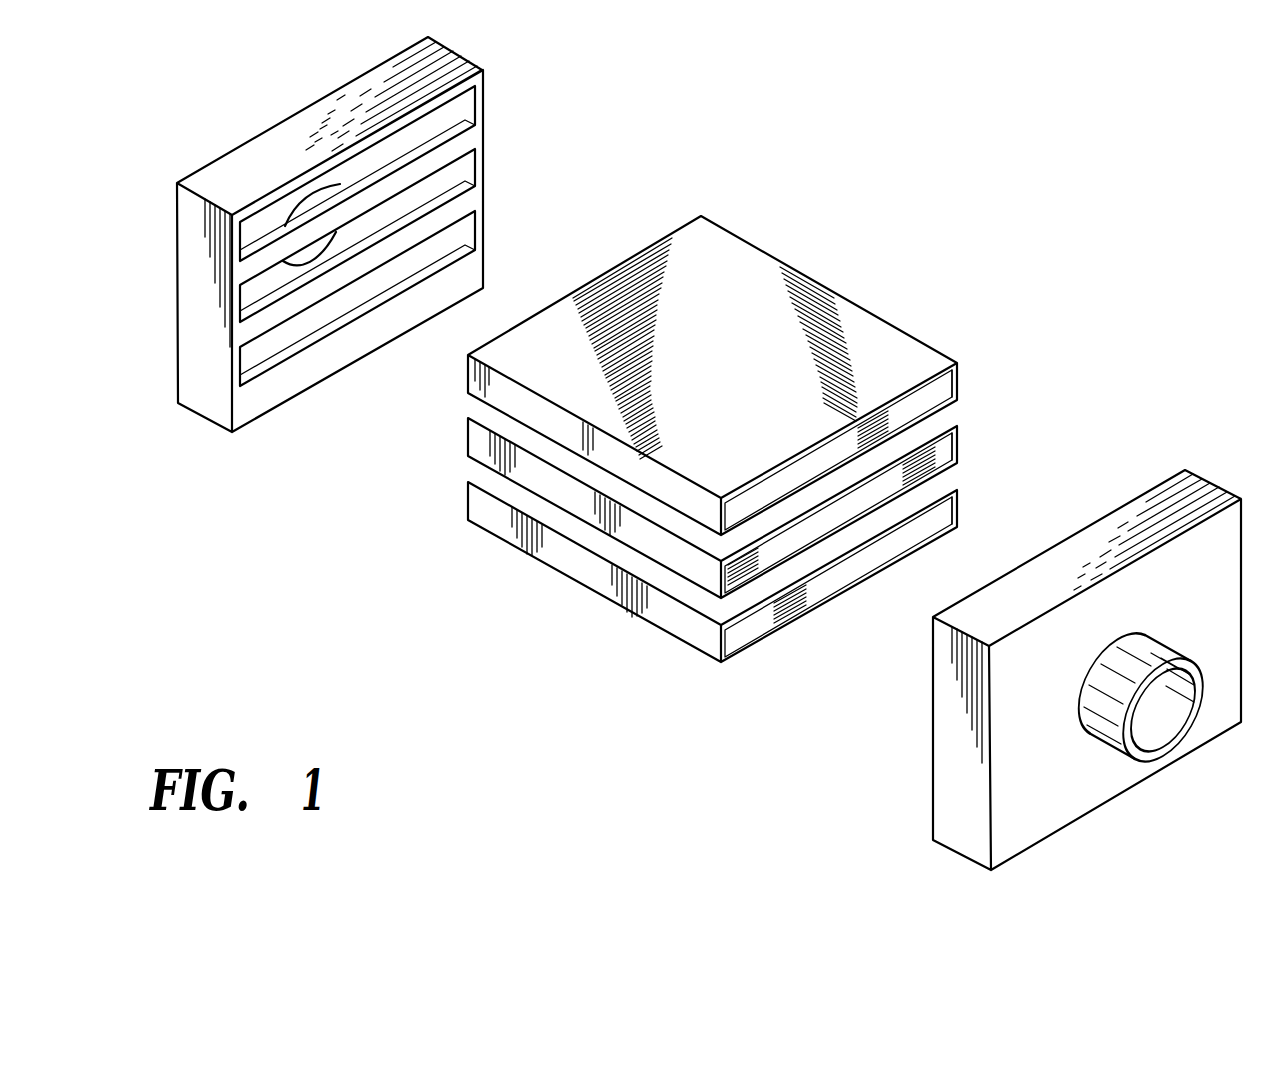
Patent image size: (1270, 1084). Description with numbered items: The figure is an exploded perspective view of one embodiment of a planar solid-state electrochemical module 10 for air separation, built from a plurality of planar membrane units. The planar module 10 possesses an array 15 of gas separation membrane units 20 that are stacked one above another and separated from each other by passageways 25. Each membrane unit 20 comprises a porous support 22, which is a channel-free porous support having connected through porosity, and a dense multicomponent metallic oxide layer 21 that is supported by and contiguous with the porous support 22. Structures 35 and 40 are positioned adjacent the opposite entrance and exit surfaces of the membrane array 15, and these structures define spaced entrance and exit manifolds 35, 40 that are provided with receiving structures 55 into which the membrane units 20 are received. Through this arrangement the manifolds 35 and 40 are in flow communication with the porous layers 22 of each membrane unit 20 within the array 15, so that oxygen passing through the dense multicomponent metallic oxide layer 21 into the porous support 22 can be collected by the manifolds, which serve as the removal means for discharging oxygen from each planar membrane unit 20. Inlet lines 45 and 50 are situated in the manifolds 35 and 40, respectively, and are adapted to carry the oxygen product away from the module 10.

The planar module 10 is at (467, 527).
The array of gas separation membrane units 15 is at (738, 228).
The gas separation membrane unit 20 is at (467, 500).
The dense multicomponent metallic oxide layer 21 is at (720, 644).
The porous support 22 is at (843, 575).
The passageways 25 is at (958, 542).
The manifold 35 is at (1083, 818).
The manifold 40 is at (228, 153).
The inlet line 45 is at (1170, 750).
The inlet line 50 is at (340, 187).
The receiving structures 55 is at (532, 163).